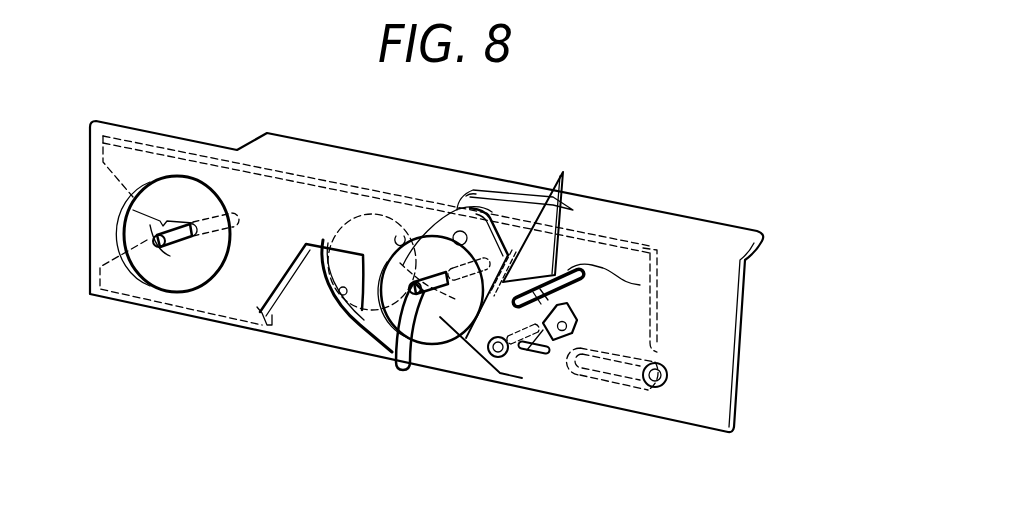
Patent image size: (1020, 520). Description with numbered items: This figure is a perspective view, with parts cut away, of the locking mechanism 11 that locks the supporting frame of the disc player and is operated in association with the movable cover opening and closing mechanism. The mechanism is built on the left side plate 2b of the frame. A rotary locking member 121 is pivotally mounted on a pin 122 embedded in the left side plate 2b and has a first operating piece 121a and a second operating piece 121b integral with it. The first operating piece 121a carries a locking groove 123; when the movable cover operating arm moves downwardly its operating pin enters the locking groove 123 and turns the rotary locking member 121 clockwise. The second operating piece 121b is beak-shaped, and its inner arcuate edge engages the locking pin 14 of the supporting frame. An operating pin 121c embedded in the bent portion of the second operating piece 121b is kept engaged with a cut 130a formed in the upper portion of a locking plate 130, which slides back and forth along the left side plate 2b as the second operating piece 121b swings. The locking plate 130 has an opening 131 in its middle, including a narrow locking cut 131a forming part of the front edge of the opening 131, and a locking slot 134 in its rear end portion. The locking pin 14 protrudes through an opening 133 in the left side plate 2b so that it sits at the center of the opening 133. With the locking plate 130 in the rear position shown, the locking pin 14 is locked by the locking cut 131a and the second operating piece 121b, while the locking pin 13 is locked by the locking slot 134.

The left side plate 2b is at (727, 360).
The locking mechanism 11 is at (382, 388).
The locking pin 13 is at (163, 224).
The locking pin 14 is at (434, 283).
The rotary locking member 121 is at (567, 258).
The first operating piece 121a is at (556, 352).
The second operating piece 121b is at (383, 320).
The operating pin 121c is at (483, 192).
The pin 122 is at (498, 360).
The locking groove 123 is at (640, 285).
The locking plate 130 is at (645, 246).
The cut 130a is at (513, 208).
The opening 131 is at (330, 300).
The locking cut 131a is at (450, 255).
The opening 133 is at (400, 237).
The locking slot 134 is at (164, 220).